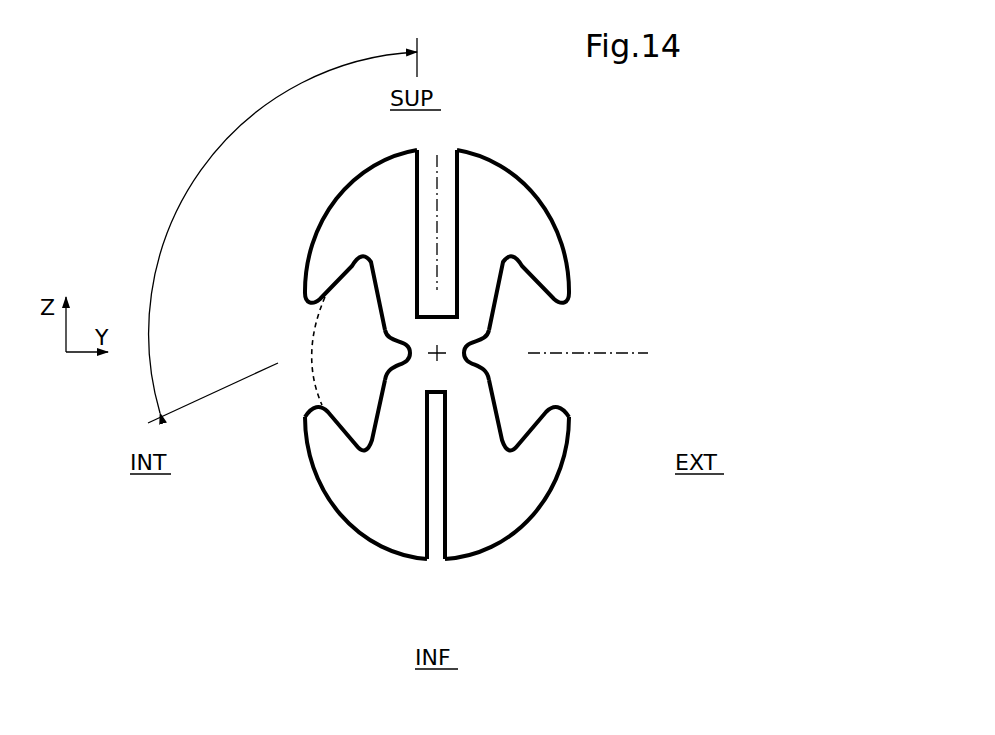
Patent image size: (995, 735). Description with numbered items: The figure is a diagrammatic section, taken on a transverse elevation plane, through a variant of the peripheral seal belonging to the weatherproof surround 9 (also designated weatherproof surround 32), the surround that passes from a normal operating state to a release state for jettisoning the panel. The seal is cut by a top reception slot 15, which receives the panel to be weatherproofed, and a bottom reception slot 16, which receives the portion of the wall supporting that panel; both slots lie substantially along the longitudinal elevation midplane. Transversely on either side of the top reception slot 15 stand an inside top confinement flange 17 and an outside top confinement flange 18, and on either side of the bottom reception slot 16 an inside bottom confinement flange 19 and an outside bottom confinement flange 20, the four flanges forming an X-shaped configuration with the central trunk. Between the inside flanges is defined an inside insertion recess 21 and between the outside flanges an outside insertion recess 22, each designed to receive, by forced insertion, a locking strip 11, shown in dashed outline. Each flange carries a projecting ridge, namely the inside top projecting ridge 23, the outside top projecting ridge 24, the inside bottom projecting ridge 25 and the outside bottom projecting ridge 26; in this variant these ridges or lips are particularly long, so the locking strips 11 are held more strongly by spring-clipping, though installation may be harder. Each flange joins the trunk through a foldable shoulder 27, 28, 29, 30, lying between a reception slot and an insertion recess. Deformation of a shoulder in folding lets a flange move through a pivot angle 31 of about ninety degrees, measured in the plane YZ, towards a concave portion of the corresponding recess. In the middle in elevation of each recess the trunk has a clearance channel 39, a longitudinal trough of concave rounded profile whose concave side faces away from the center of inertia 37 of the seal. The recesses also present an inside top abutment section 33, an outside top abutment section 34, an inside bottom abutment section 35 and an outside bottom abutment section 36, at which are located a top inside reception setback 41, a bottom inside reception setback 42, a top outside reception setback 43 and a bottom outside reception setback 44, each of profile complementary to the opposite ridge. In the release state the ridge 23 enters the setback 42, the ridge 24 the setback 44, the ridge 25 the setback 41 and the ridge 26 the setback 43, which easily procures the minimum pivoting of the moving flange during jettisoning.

The weatherproof surround 9 is at (697, 188).
The locking strip 11 is at (330, 320).
The top reception slot 15 is at (442, 146).
The bottom reception slot 16 is at (435, 565).
The inside top confinement flange 17 is at (360, 172).
The outside top confinement flange 18 is at (522, 176).
The inside bottom confinement flange 19 is at (367, 542).
The outside bottom confinement flange 20 is at (507, 542).
The inside insertion recess 21 is at (333, 355).
The outside insertion recess 22 is at (535, 372).
The inside top projecting ridge 23 is at (318, 292).
The outside top projecting ridge 24 is at (557, 288).
The inside bottom projecting ridge 25 is at (318, 415).
The outside bottom projecting ridge 26 is at (555, 417).
The foldable shoulder 27 is at (398, 305).
The foldable shoulder 28 is at (472, 305).
The foldable shoulder 29 is at (417, 407).
The foldable shoulder 30 is at (468, 407).
The pivot angle 31 is at (197, 177).
The weatherproof surround 32 is at (748, 155).
The inside top abutment section 33 is at (360, 265).
The outside top abutment section 34 is at (498, 292).
The inside bottom abutment section 35 is at (380, 414).
The outside bottom abutment section 36 is at (497, 420).
The center of inertia 37 is at (437, 348).
The clearance channel 39 is at (398, 353).
The top inside reception setback 41 is at (358, 440).
The bottom inside reception setback 42 is at (348, 272).
The top outside reception setback 43 is at (512, 442).
The bottom outside reception setback 44 is at (513, 270).